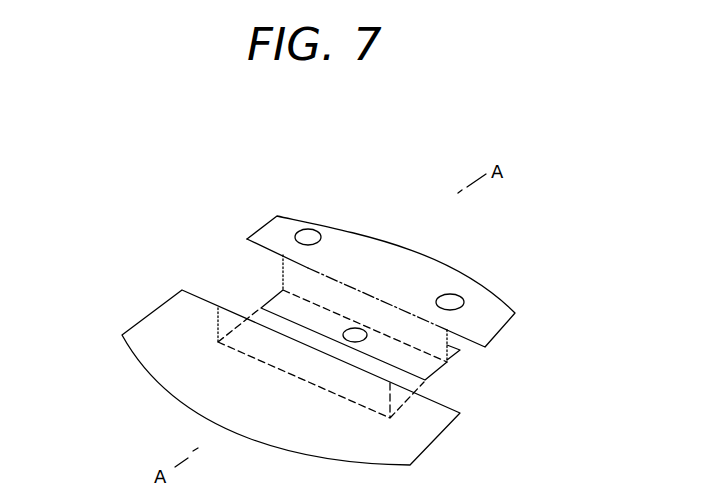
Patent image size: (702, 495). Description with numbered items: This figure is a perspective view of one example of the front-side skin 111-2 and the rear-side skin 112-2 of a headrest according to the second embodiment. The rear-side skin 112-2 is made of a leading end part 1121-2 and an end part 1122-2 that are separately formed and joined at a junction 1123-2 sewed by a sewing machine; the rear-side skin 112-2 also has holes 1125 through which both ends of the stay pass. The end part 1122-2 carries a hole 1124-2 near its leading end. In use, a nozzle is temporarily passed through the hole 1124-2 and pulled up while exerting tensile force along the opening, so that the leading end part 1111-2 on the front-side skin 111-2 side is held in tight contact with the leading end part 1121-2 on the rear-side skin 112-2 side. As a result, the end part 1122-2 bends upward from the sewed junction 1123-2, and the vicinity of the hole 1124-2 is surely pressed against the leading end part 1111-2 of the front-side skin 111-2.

The front-side skin 111-2 is at (190, 378).
The leading end part 1111-2 is at (260, 337).
The rear-side skin 112-2 is at (425, 277).
The leading end part 1121-2 is at (300, 276).
The end part 1122-2 is at (282, 306).
The junction 1123-2 is at (460, 350).
The hole 1124-2 is at (355, 322).
The holes 1125 is at (305, 228).